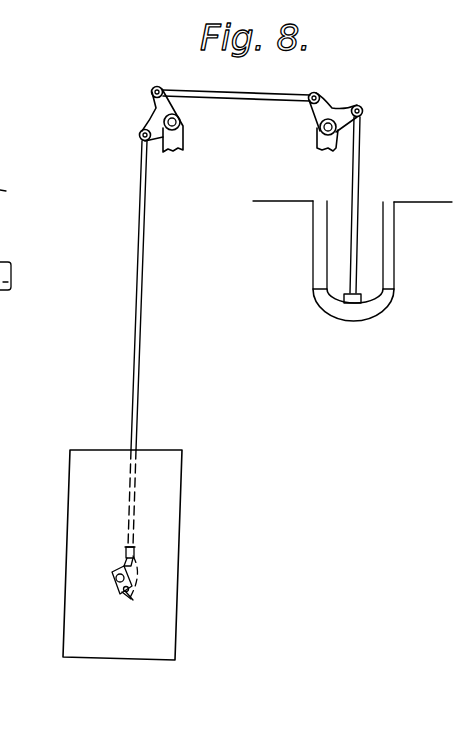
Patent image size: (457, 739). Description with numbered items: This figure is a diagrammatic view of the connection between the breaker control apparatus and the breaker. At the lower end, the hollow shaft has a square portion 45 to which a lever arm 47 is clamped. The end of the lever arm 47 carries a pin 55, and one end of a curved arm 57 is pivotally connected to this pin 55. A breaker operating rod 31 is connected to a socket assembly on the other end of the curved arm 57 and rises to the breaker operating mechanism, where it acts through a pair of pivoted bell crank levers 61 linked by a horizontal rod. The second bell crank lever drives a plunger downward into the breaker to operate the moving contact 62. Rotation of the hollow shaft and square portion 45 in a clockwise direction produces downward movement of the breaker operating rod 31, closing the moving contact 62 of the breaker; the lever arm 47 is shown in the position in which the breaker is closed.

The breaker operating rod 31 is at (136, 372).
The square portion 45 is at (112, 580).
The lever arm 47 is at (122, 591).
The pin 55 is at (133, 601).
The curved arm 57 is at (138, 575).
The bell crank levers 61 is at (160, 99).
The moving contact 62 is at (337, 312).